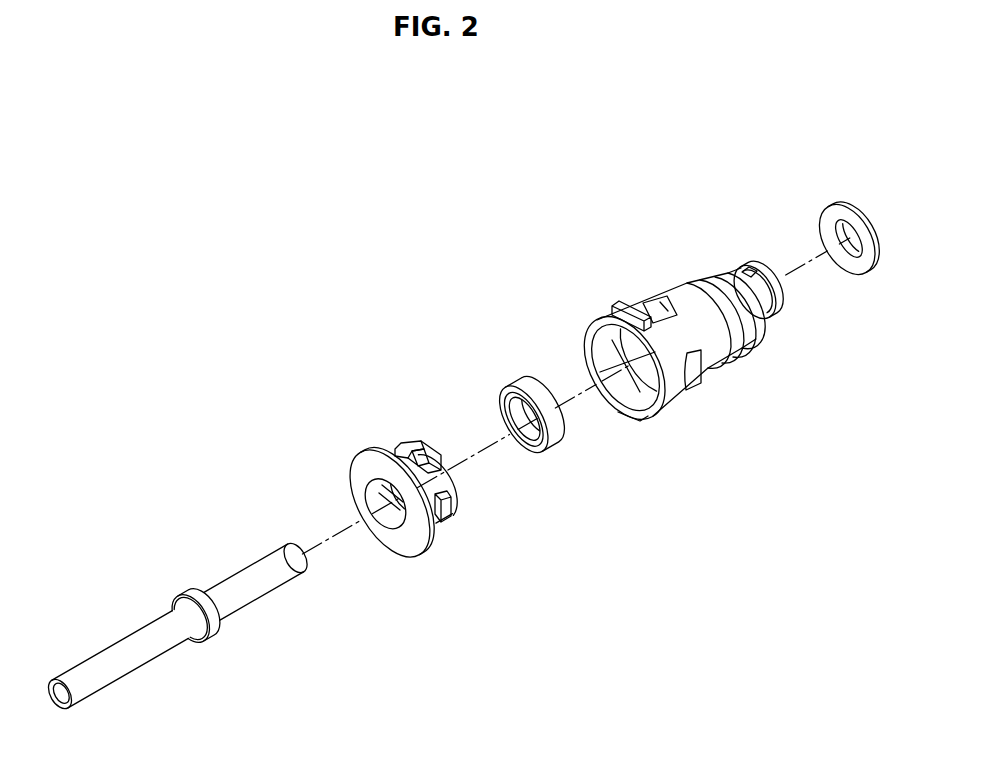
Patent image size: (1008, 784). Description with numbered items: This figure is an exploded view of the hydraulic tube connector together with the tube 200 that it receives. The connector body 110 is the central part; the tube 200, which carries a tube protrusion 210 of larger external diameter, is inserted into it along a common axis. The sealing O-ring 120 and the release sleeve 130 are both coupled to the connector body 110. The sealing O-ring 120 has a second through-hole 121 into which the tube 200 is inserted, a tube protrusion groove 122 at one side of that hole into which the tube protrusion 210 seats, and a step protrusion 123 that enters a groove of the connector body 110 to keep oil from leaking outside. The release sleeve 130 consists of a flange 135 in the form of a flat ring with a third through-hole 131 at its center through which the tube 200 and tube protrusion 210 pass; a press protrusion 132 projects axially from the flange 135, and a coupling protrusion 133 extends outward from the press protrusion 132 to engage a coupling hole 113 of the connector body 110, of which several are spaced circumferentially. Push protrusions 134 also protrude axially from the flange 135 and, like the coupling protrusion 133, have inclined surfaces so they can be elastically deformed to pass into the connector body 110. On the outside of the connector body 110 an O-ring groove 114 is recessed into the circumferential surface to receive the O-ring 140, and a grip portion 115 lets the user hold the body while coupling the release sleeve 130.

The connector body 110 is at (676, 311).
The coupling hole 113 is at (656, 300).
The O-ring groove 114 is at (754, 266).
The grip portion 115 is at (630, 303).
The sealing O-ring 120 is at (534, 406).
The second through-hole 121 is at (531, 412).
The tube protrusion groove 122 is at (518, 444).
The step protrusion 123 is at (565, 420).
The release sleeve 130 is at (398, 474).
The third through-hole 131 is at (376, 499).
The press protrusion 132 is at (426, 443).
The coupling protrusion 133 is at (403, 442).
The push protrusion 134 is at (452, 505).
The flange 135 is at (350, 484).
The O-ring 140 is at (841, 200).
The tube 200 is at (135, 622).
The tube protrusion 210 is at (192, 595).